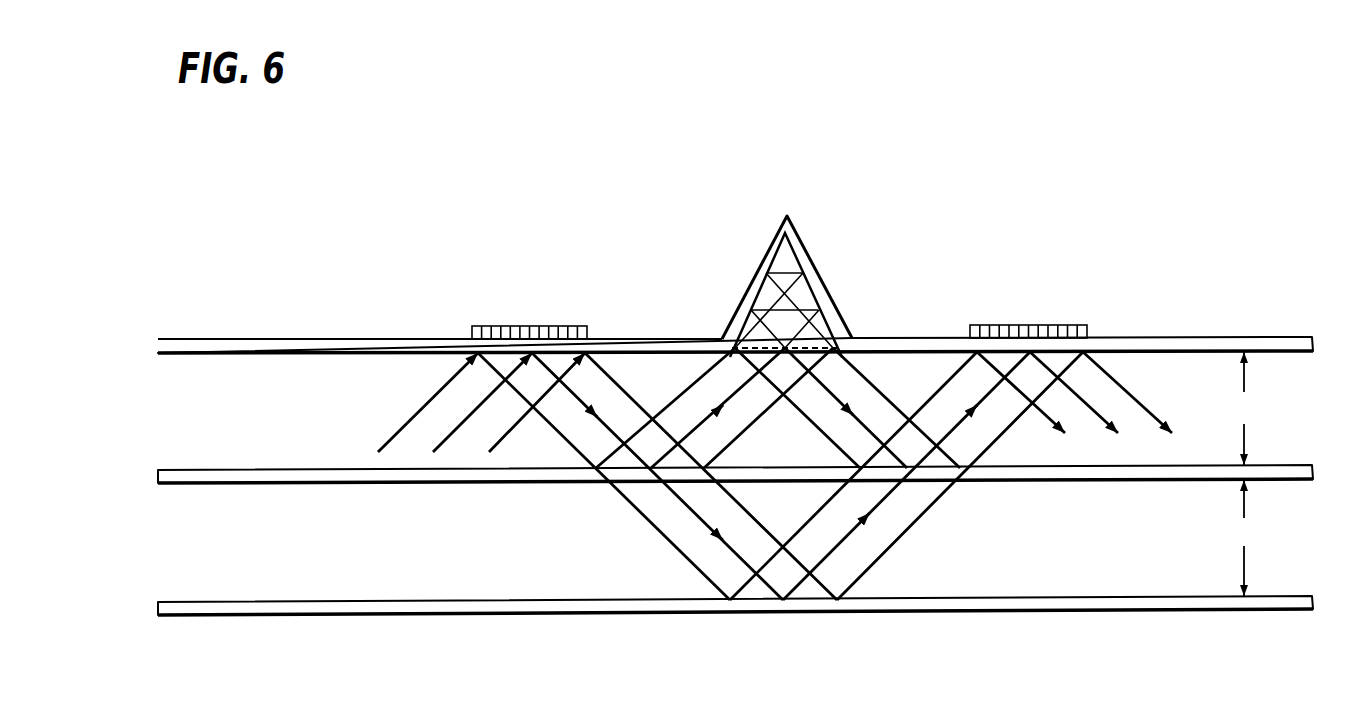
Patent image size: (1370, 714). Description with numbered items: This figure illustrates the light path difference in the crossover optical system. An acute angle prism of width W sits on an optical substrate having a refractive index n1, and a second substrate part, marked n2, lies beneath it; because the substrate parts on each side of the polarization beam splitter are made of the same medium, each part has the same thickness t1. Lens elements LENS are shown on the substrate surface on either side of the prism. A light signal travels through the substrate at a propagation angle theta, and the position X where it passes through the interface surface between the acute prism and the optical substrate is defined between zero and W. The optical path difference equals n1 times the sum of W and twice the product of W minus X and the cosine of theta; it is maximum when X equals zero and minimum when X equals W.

The refractive index of the optical substrate n1 is at (735, 402).
The second layer with refractive index n2 is at (735, 483).
The width of the acute angle prism W is at (851, 338).
The grating lens LENS is at (779, 313).
The thickness of the substrate part t1 is at (1244, 474).